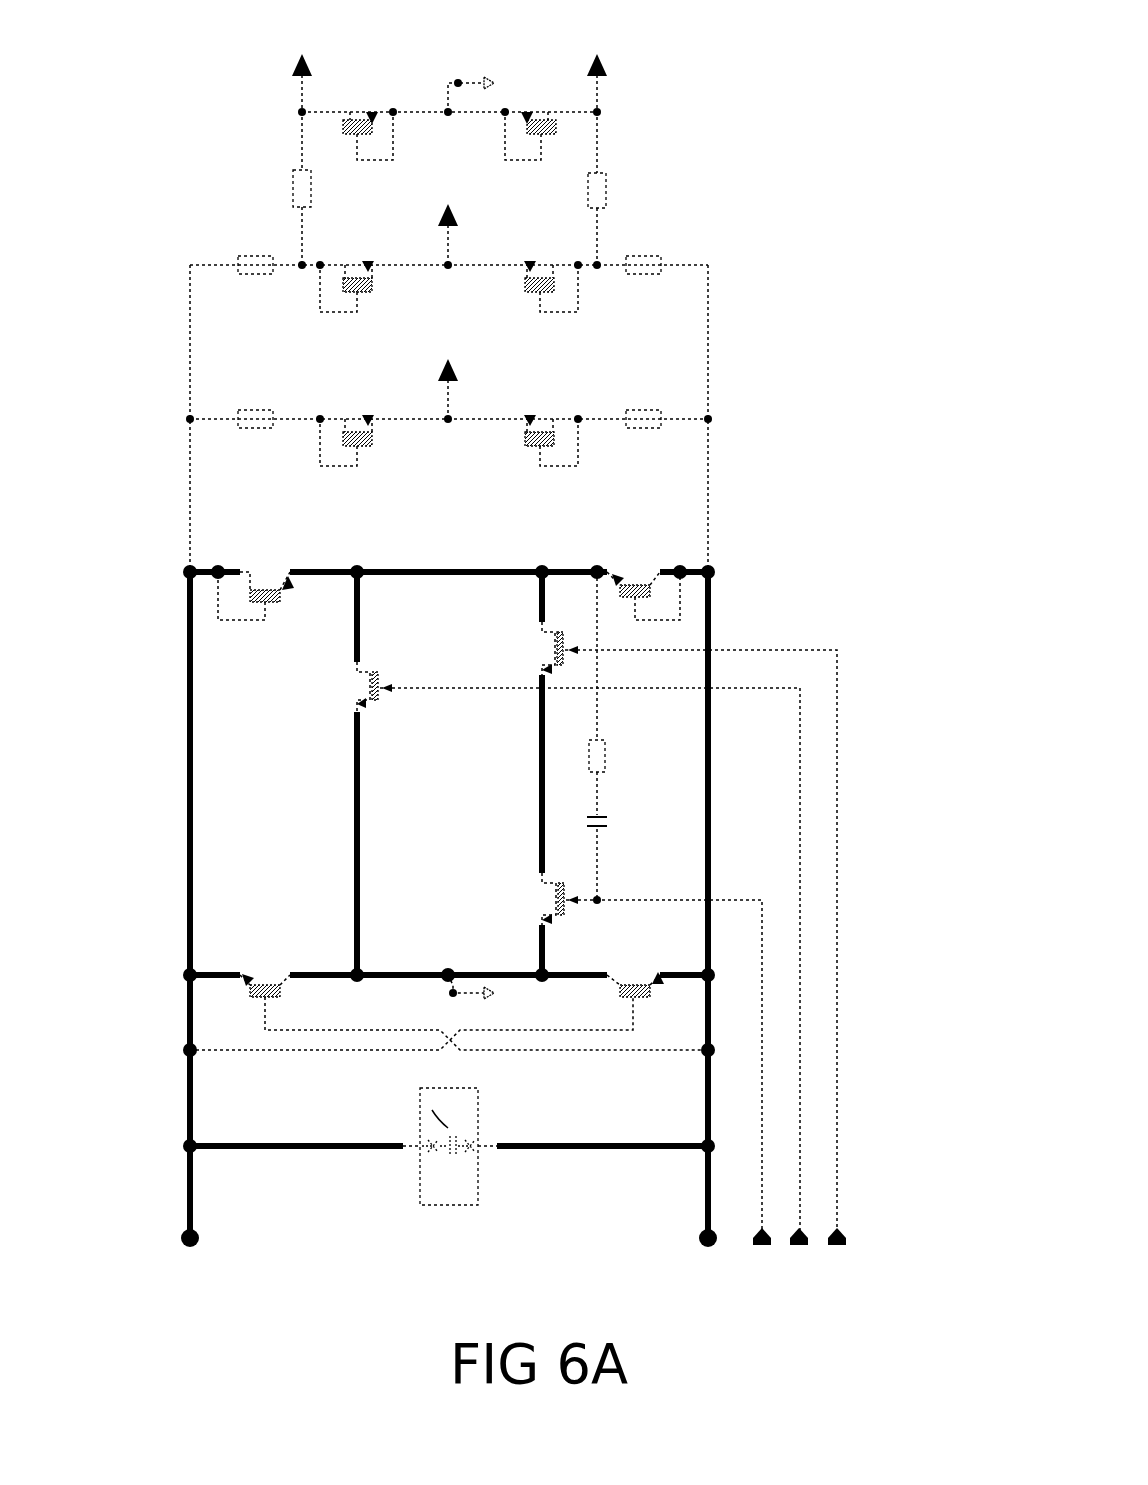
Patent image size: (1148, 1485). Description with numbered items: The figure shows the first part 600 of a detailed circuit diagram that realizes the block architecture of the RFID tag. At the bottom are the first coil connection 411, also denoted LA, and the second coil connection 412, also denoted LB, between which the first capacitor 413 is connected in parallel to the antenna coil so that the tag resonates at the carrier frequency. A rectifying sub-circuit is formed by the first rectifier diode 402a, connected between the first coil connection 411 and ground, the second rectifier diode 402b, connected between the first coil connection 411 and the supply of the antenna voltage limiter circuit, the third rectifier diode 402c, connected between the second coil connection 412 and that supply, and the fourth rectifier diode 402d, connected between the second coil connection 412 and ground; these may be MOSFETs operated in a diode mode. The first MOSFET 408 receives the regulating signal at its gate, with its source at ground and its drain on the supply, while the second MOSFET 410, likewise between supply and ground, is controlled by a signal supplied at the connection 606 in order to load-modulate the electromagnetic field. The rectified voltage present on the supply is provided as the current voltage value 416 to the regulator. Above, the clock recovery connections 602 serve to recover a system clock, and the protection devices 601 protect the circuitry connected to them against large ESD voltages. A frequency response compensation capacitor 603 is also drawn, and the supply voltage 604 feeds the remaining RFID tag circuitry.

The first part 600 is at (205, 70).
The clock recovery connections 602 is at (297, 60).
The protection devices 601 is at (372, 140).
The supply voltage 604 is at (460, 220).
The current voltage value 416 is at (458, 375).
The first rectifier diode 402a is at (250, 978).
The second rectifier diode 402b is at (275, 603).
The third rectifier diode 402c is at (636, 600).
The fourth rectifier diode 402d is at (645, 1000).
The second MOSFET 410 is at (375, 702).
The first MOSFET 408 is at (540, 900).
The frequency response compensation capacitor 603 is at (592, 818).
The first capacitor 413 is at (428, 1146).
The first coil connection 411 is at (182, 1236).
The second coil connection 412 is at (700, 1236).
The connection 606 is at (800, 1246).